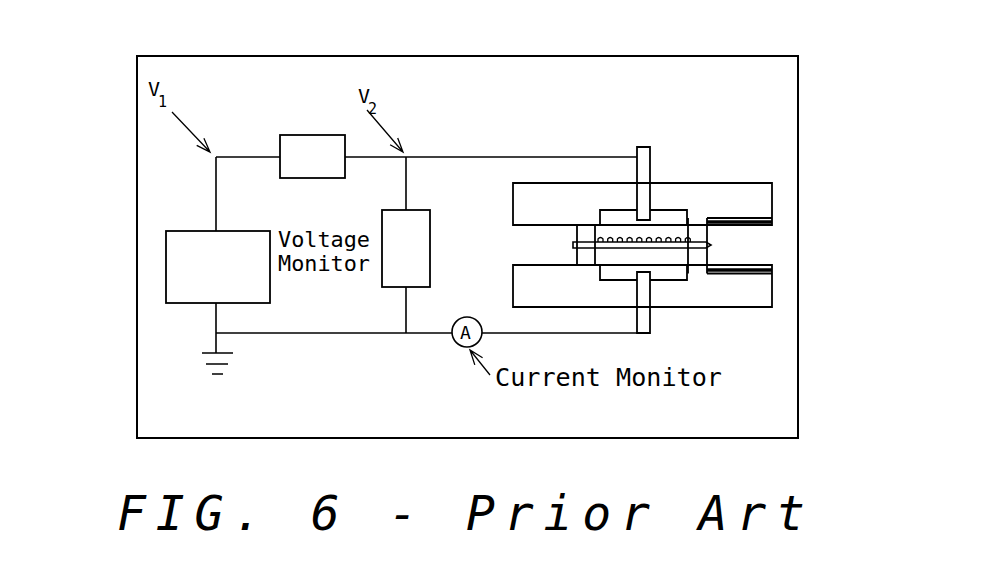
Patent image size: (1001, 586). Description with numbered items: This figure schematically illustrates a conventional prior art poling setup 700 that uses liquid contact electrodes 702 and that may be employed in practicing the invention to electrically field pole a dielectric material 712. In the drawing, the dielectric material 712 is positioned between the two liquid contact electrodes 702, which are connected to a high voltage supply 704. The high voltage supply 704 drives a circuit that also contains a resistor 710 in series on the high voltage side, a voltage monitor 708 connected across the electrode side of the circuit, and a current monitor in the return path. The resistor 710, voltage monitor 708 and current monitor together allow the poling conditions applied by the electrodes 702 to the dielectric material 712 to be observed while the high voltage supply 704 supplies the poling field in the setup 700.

The poling setup 700 is at (98, 182).
The liquid contact electrodes 702 is at (670, 216).
The high voltage supply 704 is at (167, 269).
The voltage monitor 708 is at (397, 283).
The resistor 710 is at (320, 137).
The dielectric material 712 is at (711, 246).